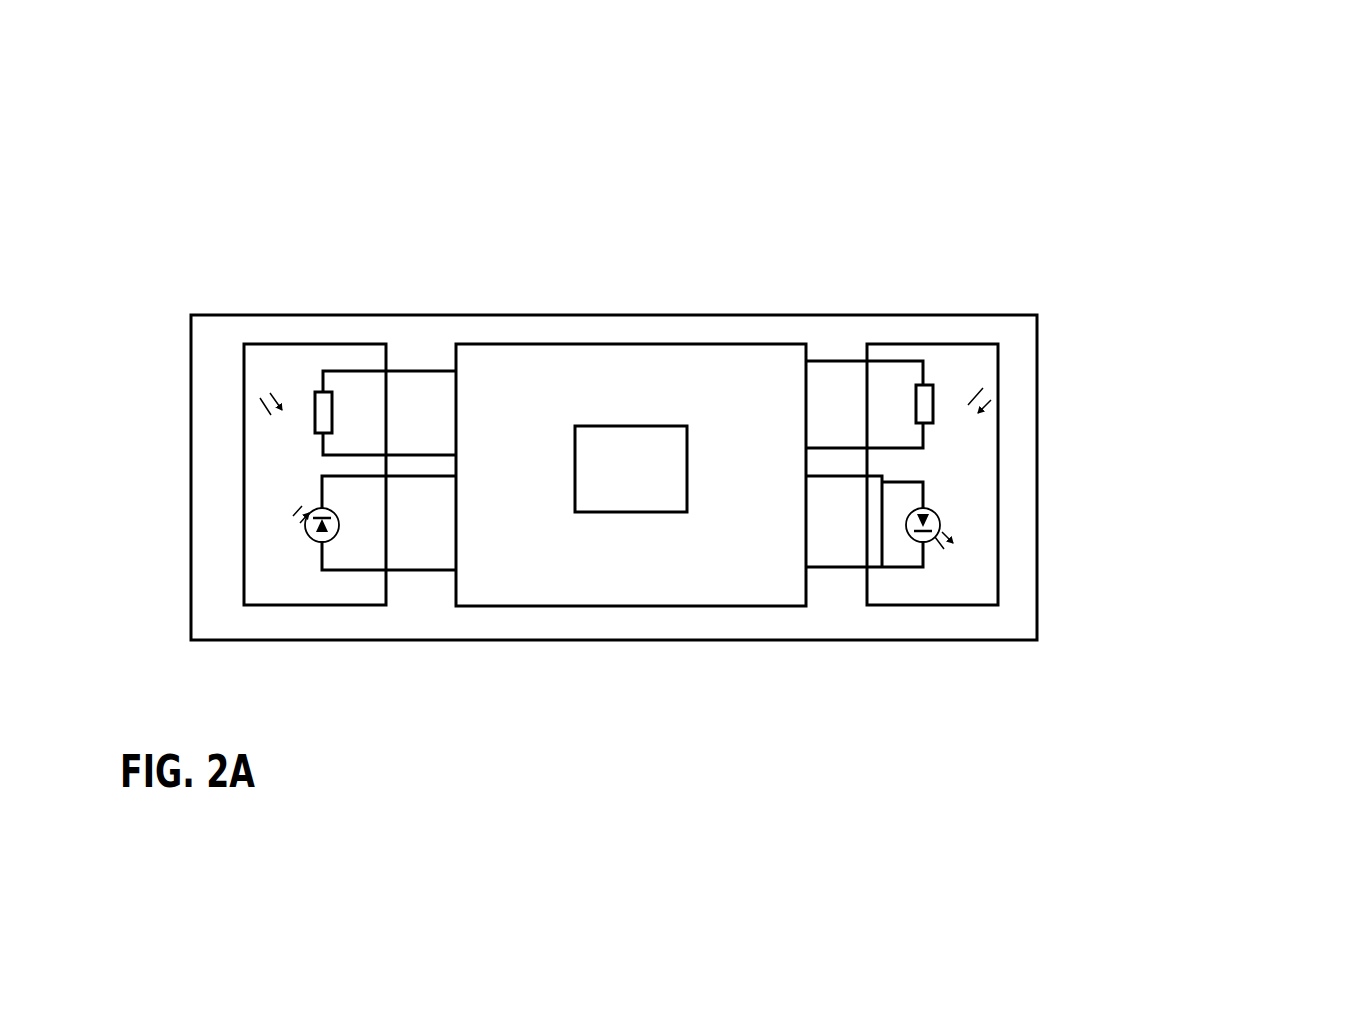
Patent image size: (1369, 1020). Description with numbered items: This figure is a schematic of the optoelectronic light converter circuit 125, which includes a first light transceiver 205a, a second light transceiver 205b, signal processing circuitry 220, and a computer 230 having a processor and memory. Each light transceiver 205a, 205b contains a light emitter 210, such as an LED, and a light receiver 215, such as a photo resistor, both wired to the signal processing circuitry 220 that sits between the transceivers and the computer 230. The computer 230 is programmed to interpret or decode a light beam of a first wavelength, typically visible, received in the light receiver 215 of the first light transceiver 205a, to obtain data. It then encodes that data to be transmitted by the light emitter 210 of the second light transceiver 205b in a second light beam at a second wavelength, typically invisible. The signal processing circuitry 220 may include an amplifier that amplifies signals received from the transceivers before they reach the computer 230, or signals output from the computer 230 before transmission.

The optoelectronic light converter circuit 125 is at (873, 314).
The first light transceiver 205a is at (317, 345).
The second light transceiver 205b is at (998, 361).
The light emitter 210 is at (329, 510).
The light receiver 215 is at (324, 391).
The signal processing circuitry 220 is at (697, 344).
The computer 230 is at (632, 425).